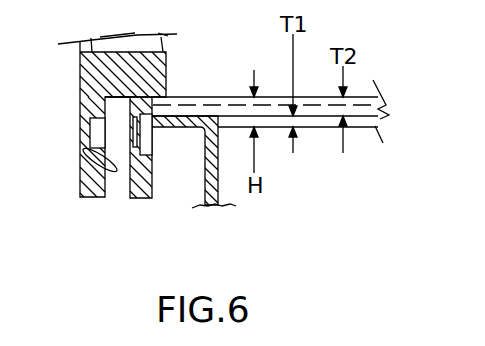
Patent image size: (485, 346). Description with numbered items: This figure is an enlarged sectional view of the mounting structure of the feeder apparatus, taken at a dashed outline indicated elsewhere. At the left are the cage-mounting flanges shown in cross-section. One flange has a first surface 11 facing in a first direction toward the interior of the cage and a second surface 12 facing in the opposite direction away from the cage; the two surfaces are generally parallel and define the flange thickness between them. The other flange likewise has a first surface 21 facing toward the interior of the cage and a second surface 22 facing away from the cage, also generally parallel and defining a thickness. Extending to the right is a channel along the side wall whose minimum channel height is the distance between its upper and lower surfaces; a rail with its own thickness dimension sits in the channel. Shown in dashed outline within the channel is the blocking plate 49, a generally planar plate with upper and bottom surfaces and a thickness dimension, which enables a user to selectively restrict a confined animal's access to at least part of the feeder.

The first surface 11 is at (79, 92).
The second surface 12 is at (83, 152).
The first surface 21 is at (123, 197).
The second surface 22 is at (150, 175).
The blocking plate 49 is at (222, 108).